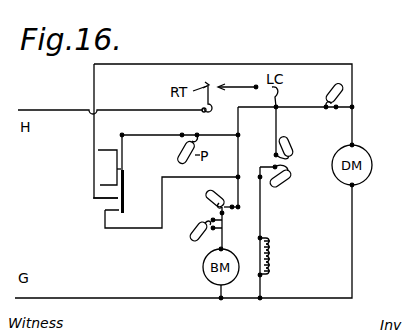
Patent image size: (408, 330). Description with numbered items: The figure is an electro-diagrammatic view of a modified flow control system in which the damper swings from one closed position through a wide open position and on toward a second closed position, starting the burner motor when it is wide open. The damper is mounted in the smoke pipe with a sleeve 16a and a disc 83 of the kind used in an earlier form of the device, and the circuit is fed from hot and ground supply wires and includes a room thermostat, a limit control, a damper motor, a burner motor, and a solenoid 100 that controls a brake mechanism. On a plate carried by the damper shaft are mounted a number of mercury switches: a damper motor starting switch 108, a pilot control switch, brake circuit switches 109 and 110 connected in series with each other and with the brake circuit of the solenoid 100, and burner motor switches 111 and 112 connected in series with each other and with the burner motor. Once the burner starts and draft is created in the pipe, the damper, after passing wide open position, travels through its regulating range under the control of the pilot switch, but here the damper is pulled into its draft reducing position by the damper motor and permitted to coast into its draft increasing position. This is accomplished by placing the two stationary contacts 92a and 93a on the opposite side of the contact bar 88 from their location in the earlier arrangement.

The sleeve 16a is at (100, 151).
The disc 83 is at (95, 176).
The contact bar 88 is at (125, 208).
The stationary contact 93a is at (112, 200).
The stationary contact 92a is at (115, 211).
The burner motor switch 112 is at (207, 197).
The burner motor switch 111 is at (192, 234).
The brake circuit switch 110 is at (292, 145).
The brake circuit switch 109 is at (288, 184).
The damper motor starting switch 108 is at (329, 86).
The solenoid 100 is at (279, 257).